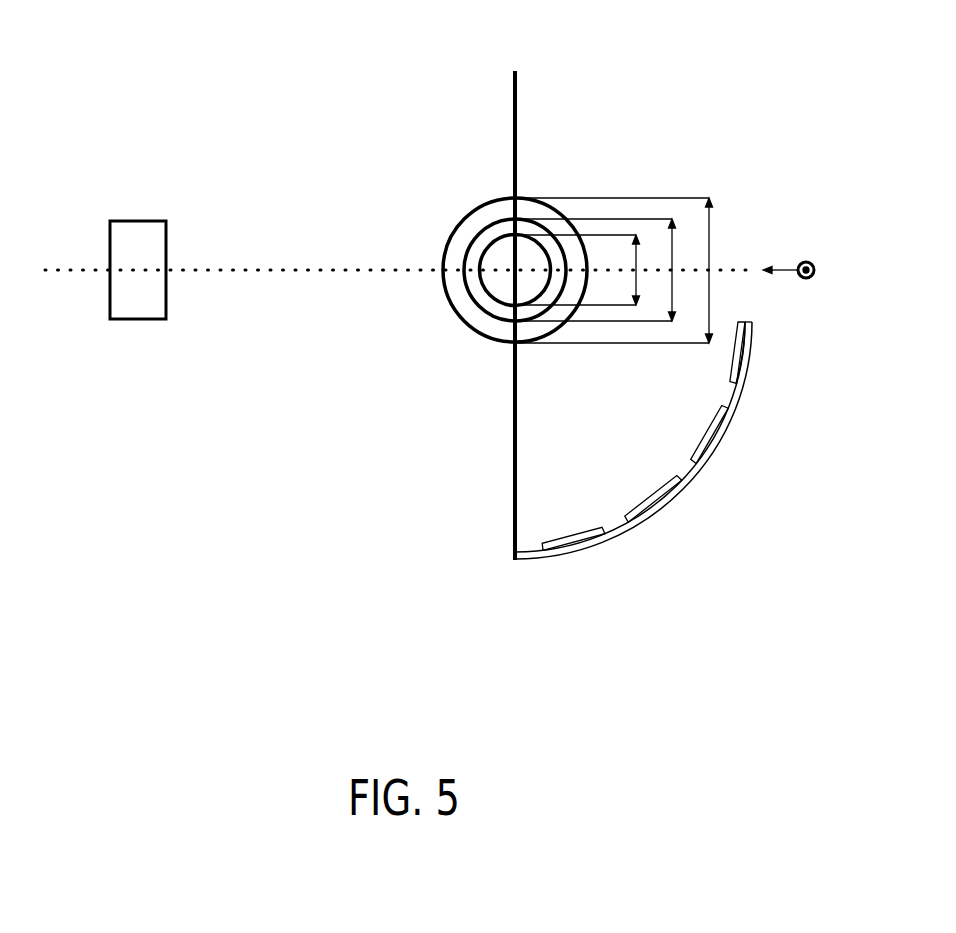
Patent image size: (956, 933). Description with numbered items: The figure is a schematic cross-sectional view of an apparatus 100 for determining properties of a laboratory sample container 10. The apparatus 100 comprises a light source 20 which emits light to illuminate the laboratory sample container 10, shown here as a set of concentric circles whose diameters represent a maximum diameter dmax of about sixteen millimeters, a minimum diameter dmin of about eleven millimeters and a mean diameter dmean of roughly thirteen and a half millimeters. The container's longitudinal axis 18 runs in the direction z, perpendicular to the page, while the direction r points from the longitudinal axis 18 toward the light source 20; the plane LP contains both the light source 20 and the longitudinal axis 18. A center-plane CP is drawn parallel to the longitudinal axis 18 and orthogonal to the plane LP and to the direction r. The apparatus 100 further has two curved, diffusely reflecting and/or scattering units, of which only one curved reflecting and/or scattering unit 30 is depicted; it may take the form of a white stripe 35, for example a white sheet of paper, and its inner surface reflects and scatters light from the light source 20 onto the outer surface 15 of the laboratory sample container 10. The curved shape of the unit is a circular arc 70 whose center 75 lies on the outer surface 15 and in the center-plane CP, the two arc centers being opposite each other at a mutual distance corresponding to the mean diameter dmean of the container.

The apparatus 100 is at (276, 86).
The laboratory sample container 10 is at (466, 188).
The outer surface 15 is at (465, 248).
The longitudinal axis 18 is at (515, 270).
The center 75 is at (515, 322).
The light source 20 is at (137, 320).
The curved reflecting and/or scattering unit 30 is at (689, 495).
The white stripe 35 is at (560, 522).
The circular arc 70 is at (747, 373).
The plane LP is at (83, 270).
The center-plane CP is at (515, 108).
The minimum diameter dmin is at (640, 257).
The mean diameter dmean is at (675, 257).
The maximum diameter dmax is at (709, 257).
The direction r is at (780, 252).
The direction z is at (813, 254).